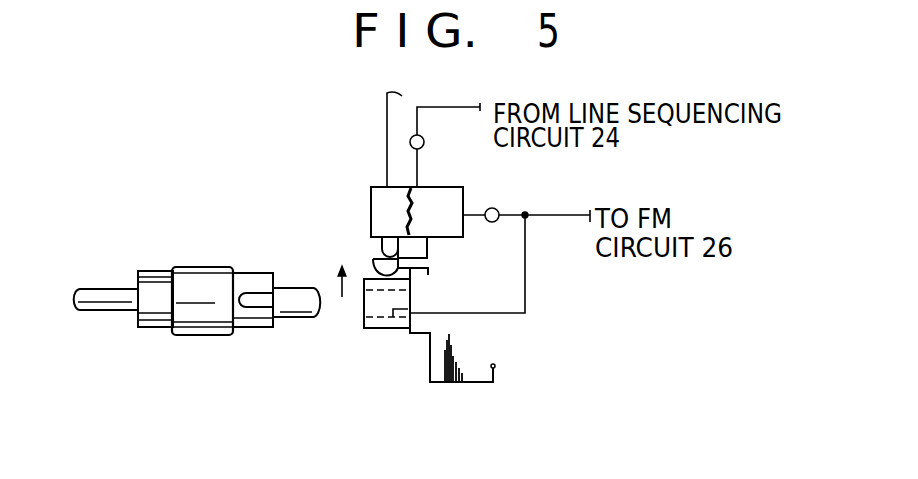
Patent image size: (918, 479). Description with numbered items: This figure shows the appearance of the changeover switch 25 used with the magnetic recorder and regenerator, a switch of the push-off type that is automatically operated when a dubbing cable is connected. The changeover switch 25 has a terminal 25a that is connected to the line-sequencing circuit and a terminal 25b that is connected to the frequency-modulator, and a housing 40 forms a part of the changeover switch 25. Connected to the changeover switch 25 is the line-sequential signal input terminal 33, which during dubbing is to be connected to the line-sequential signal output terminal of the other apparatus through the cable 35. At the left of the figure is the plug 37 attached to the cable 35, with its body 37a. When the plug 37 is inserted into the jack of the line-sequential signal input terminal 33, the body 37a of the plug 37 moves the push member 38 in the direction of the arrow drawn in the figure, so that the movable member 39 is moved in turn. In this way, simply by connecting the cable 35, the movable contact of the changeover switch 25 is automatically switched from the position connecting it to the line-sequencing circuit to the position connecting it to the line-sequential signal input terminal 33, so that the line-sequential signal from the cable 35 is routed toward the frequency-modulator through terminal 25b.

The changeover switch 25 is at (375, 164).
The terminal 25a is at (425, 146).
The terminal 25b is at (498, 209).
The line-sequential signal input terminal 33 is at (392, 336).
The cable 35 is at (110, 287).
The plug 37 is at (208, 343).
The body 37a is at (197, 266).
The push member 38 is at (372, 262).
The movable member 39 is at (383, 243).
The housing 40 is at (380, 205).